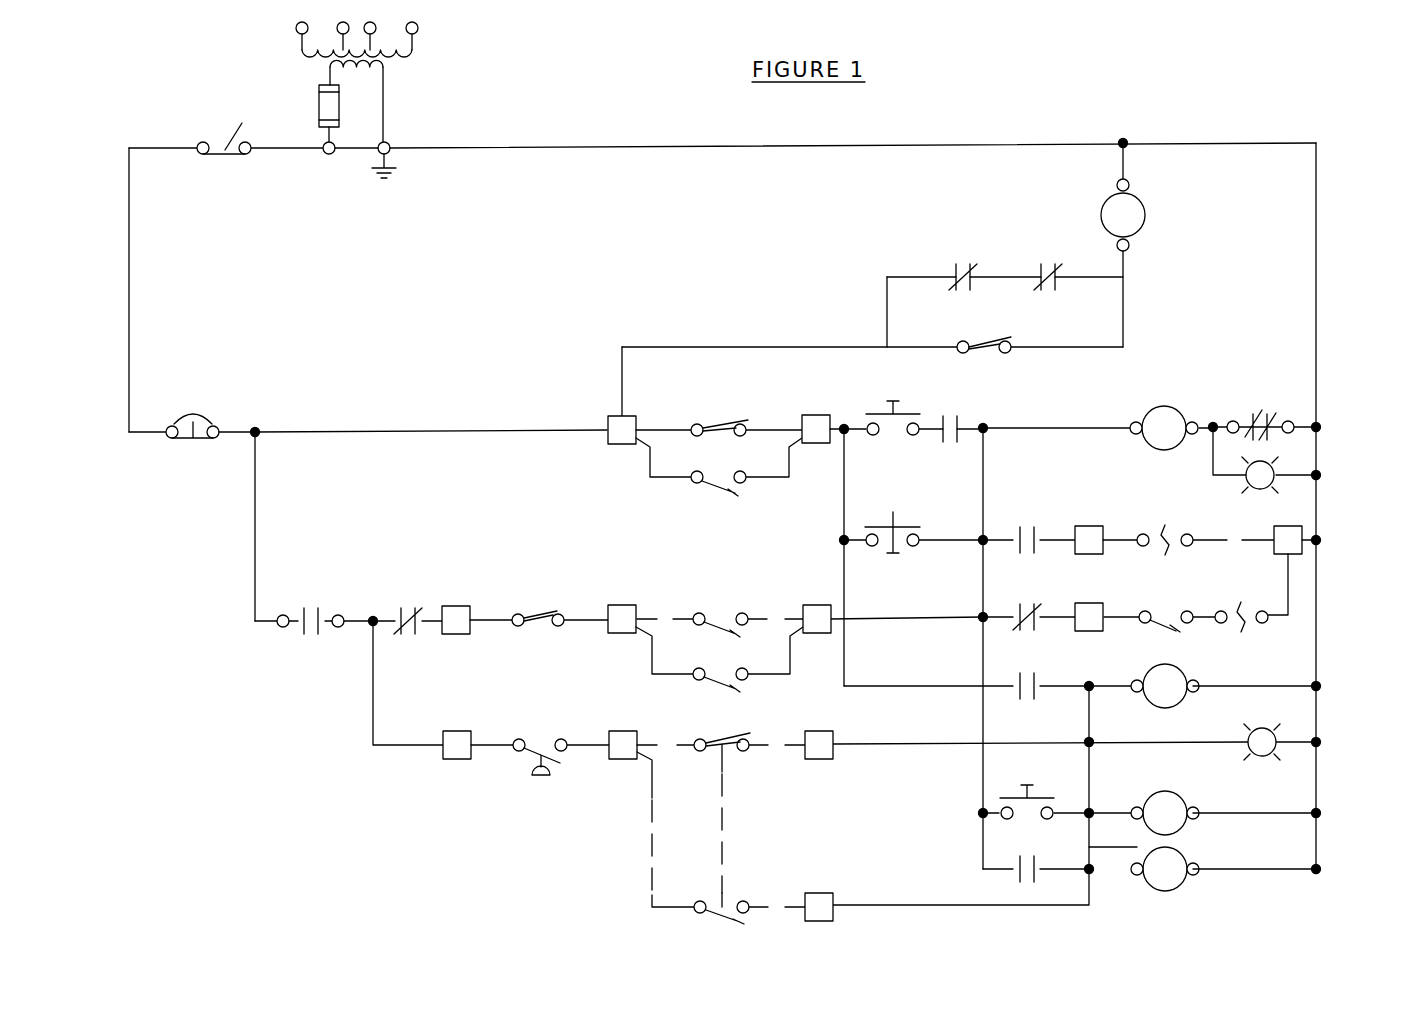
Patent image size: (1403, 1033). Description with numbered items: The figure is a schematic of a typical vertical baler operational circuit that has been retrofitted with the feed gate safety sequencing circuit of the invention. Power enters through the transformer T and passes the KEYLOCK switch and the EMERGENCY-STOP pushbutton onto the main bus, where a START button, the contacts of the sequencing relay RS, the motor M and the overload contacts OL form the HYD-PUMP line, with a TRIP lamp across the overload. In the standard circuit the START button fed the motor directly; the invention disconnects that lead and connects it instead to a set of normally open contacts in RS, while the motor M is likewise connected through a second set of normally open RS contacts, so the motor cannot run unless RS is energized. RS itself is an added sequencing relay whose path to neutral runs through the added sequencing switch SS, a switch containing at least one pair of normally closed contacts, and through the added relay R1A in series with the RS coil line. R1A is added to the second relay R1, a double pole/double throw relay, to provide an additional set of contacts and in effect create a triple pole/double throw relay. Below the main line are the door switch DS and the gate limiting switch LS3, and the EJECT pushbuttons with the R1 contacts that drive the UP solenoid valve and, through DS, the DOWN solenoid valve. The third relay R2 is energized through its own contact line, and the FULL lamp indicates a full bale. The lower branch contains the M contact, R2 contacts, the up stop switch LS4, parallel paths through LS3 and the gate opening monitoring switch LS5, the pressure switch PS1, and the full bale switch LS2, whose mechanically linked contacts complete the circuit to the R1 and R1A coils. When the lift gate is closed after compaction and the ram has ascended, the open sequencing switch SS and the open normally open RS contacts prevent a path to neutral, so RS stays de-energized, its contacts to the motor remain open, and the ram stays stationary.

The transformer with fuse and ground T is at (357, 100).
The keylock switch KEYLOCK is at (223, 125).
The sequencing relay RS is at (1042, 295).
The added relay R1A is at (1101, 562).
The sequencing switch SS is at (872, 333).
The emergency stop pushbutton EMERGENCY-STOP is at (207, 399).
The door switch DS is at (925, 514).
The gate limiting switch LS3 is at (719, 537).
The start pushbutton START is at (893, 404).
The motor and M contact M is at (734, 520).
The overload contact OL is at (1264, 414).
The hydraulic pump label HYD-PUMP is at (1351, 427).
The trip indicator lamp TRIP is at (1291, 460).
The eject pushbuttons EJECT is at (966, 651).
The second relay R1 is at (1149, 690).
The up solenoid valve UP is at (1183, 536).
The down solenoid valve DOWN is at (1241, 614).
The third relay R2 is at (844, 644).
The full indicator lamp FULL is at (1103, 742).
The up stop switch LS4 is at (539, 606).
The gate opening monitoring switch LS5 is at (719, 659).
The pressure switch PS1 is at (540, 743).
The full bale switch LS2 is at (741, 818).